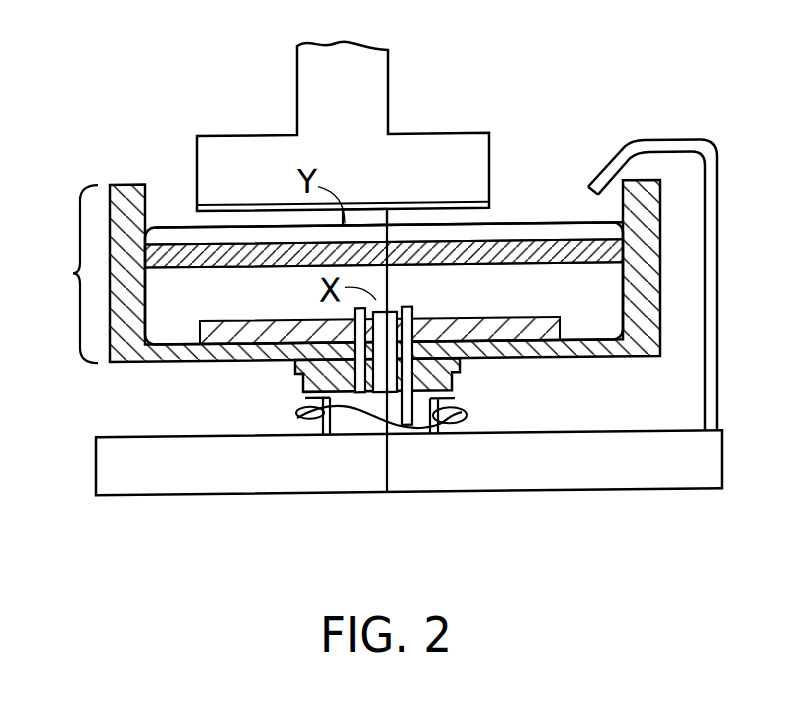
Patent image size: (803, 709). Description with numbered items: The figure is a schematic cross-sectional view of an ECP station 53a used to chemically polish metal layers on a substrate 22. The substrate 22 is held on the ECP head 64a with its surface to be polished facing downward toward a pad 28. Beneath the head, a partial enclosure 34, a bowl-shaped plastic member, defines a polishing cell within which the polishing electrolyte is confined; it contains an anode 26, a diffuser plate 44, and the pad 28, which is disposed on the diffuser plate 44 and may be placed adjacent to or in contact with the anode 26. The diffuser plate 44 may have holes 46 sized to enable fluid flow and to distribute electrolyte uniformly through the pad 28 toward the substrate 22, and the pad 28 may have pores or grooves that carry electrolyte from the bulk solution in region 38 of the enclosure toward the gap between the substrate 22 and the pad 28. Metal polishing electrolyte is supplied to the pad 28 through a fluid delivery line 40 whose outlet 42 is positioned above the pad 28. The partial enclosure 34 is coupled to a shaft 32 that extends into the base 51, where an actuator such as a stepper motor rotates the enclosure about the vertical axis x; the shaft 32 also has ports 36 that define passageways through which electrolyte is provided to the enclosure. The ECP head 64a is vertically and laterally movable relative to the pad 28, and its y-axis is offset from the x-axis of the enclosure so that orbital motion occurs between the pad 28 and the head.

The ECP head 64a is at (478, 106).
The substrate 22 is at (426, 221).
The pad 28 is at (536, 231).
The outlet 42 is at (613, 172).
The fluid delivery line 40 is at (676, 146).
The ECP station 53a is at (59, 274).
The anode 26 is at (228, 323).
The region 38 is at (290, 309).
The ports 36 is at (405, 313).
The holes 46 is at (483, 270).
The diffuser plate 44 is at (582, 272).
The partial enclosure 34 is at (636, 353).
The shaft 32 is at (420, 427).
The base 51 is at (582, 475).